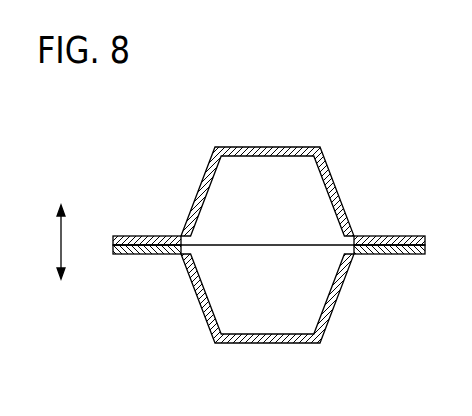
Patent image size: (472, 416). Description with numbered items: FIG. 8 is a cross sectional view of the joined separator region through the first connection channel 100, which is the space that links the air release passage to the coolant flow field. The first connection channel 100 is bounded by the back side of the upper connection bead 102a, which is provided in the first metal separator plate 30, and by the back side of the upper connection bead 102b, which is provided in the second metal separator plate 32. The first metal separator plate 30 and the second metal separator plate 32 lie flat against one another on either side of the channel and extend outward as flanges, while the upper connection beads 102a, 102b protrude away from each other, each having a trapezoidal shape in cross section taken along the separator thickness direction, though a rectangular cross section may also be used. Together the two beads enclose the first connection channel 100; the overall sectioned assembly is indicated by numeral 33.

The joined structure 33 is at (104, 116).
The first connection channel 100 is at (220, 208).
The upper connection bead 102a is at (278, 145).
The upper connection bead 102b is at (282, 344).
The first metal separator plate 30 is at (401, 232).
The second metal separator plate 32 is at (386, 258).